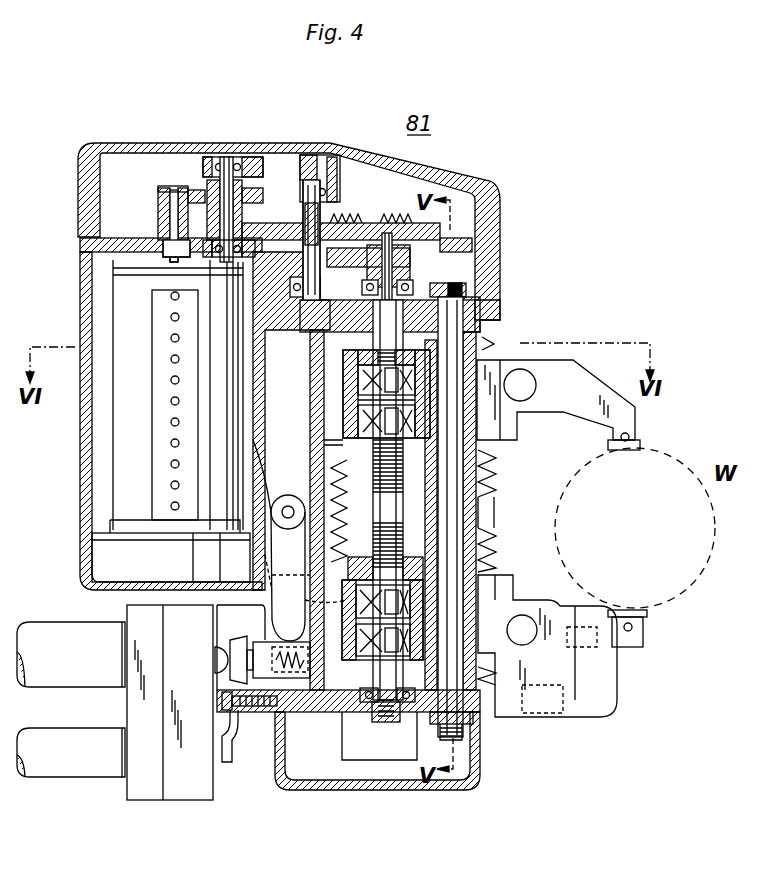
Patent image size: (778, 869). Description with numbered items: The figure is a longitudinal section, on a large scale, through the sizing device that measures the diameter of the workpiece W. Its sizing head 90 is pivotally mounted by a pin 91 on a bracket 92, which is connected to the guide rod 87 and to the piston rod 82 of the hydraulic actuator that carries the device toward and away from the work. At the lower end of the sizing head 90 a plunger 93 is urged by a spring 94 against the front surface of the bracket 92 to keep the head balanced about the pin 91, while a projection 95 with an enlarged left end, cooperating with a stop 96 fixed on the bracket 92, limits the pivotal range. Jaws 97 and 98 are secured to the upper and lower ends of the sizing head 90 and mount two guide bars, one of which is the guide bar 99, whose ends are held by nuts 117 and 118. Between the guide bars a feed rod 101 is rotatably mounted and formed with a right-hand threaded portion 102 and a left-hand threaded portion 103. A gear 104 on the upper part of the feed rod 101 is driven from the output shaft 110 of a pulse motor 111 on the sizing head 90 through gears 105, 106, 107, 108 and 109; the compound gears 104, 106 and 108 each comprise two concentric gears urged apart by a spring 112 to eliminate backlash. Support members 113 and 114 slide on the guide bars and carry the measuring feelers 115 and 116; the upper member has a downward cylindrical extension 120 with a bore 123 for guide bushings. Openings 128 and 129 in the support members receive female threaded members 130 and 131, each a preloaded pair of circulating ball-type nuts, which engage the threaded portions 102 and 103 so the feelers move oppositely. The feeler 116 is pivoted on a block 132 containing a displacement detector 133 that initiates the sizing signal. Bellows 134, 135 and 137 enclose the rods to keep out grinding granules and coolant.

The piston rod 82 is at (72, 742).
The guide rod 87 is at (62, 635).
The sizing head 90 is at (502, 257).
The pin 91 is at (288, 506).
The bracket 92 is at (200, 787).
The plunger 93 is at (222, 655).
The spring 94 is at (246, 650).
The projection 95 is at (237, 712).
The stop 96 is at (234, 740).
The jaw 97 is at (502, 312).
The jaw 98 is at (478, 713).
The guide bar 99 is at (490, 496).
The feed rod 101 is at (388, 513).
The right-hand threaded portion 102 is at (380, 496).
The left-hand threaded portion 103 is at (380, 540).
The gear 104 is at (453, 248).
The gear 105 is at (312, 318).
The gear 106 is at (360, 232).
The gear 107 is at (246, 228).
The gear 108 is at (300, 186).
The gear 109 is at (165, 200).
The output shaft 110 is at (172, 232).
The pulse motor 111 is at (127, 398).
The spring 112 is at (335, 215).
The support member 113 is at (503, 410).
The support member 114 is at (483, 600).
The feeler 115 is at (636, 441).
The feeler 116 is at (646, 616).
The nut 117 is at (460, 290).
The nut 118 is at (432, 724).
The cylindrical extension 120 is at (494, 534).
The bore 123 is at (480, 520).
The opening 128 is at (358, 372).
The opening 129 is at (315, 592).
The female threaded member 130 is at (358, 406).
The female threaded member 131 is at (330, 606).
The block 132 is at (578, 719).
The displacement detector 133 is at (540, 718).
The bellows 134 is at (320, 352).
The bellows 135 is at (340, 688).
The bellows 137 is at (330, 450).